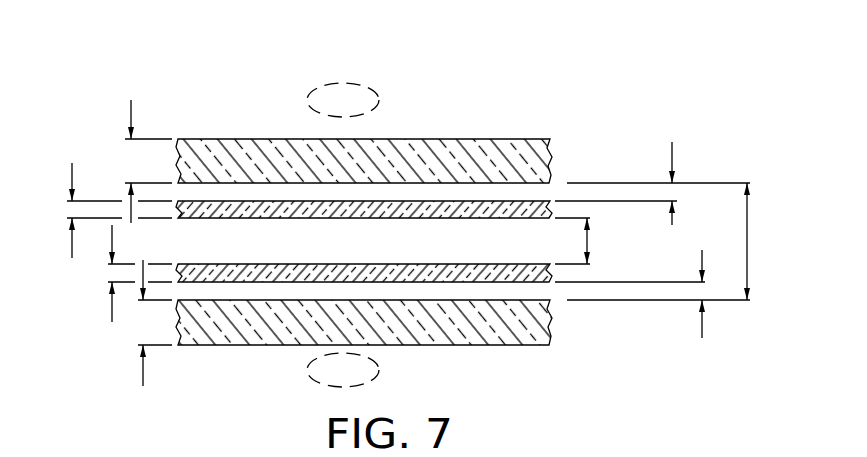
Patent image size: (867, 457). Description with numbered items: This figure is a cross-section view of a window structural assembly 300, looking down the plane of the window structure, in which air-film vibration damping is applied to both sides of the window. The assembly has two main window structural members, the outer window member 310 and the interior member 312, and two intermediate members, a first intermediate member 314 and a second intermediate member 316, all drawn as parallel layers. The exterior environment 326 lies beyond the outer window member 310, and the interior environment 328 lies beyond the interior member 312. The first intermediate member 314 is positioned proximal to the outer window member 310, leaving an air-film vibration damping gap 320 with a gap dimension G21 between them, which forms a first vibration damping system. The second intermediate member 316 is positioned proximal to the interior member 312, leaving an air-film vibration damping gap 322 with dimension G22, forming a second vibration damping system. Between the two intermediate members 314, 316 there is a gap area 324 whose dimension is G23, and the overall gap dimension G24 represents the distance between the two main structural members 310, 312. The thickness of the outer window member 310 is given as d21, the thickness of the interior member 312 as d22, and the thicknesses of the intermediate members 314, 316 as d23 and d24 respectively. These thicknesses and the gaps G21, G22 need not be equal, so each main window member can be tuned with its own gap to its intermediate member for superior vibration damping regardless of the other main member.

The window structural assembly 300 is at (202, 52).
The outer window member 310 is at (360, 173).
The interior member 312 is at (358, 333).
The first intermediate member 314 is at (400, 218).
The second intermediate member 316 is at (315, 264).
The air-film vibration damping gap 320 is at (533, 190).
The air-film vibration damping gap 322 is at (533, 289).
The gap area 324 is at (508, 242).
The exterior environment 326 is at (343, 100).
The interior environment 328 is at (343, 370).
The thickness of the outer member d21 is at (130, 105).
The thickness of the interior member d22 is at (143, 371).
The thickness of the first intermediate member d23 is at (72, 175).
The thickness of the second intermediate member d24 is at (112, 318).
The gap dimension G21 is at (674, 147).
The gap dimension G22 is at (702, 333).
The gap dimension G23 is at (590, 239).
The overall gap dimension G24 is at (757, 170).